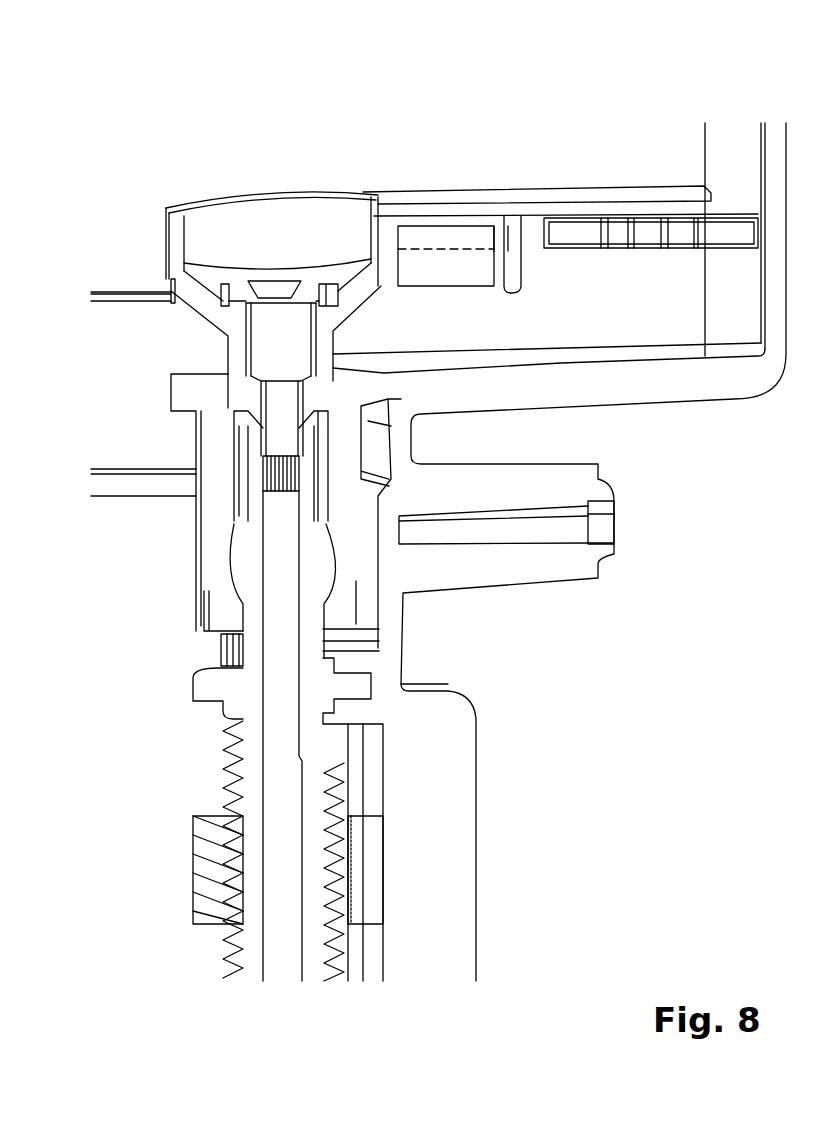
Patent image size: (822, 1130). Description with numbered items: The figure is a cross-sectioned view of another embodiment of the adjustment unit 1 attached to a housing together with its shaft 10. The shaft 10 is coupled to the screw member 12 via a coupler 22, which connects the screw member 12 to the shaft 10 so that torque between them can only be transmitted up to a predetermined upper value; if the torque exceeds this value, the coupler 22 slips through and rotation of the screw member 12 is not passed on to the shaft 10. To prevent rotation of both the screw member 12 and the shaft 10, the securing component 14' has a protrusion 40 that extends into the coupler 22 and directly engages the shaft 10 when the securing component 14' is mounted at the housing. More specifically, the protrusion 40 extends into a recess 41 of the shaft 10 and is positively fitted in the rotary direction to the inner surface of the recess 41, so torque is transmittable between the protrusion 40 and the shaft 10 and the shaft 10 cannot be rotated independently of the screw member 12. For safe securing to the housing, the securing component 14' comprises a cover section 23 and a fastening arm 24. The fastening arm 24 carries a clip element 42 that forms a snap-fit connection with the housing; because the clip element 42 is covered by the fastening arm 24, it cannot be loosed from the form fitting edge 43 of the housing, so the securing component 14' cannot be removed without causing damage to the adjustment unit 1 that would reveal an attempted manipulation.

The adjustment unit 1 is at (257, 152).
The shaft 10 is at (238, 722).
The screw member 12 is at (197, 305).
The securing component 14' is at (116, 255).
The coupler 22 is at (208, 441).
The cover section 23 is at (220, 268).
The fastening arm 24 is at (657, 186).
The protrusion 40 is at (270, 352).
The recess 41 is at (277, 553).
The clip element 42 is at (477, 268).
The form fitting edge 43 is at (432, 247).